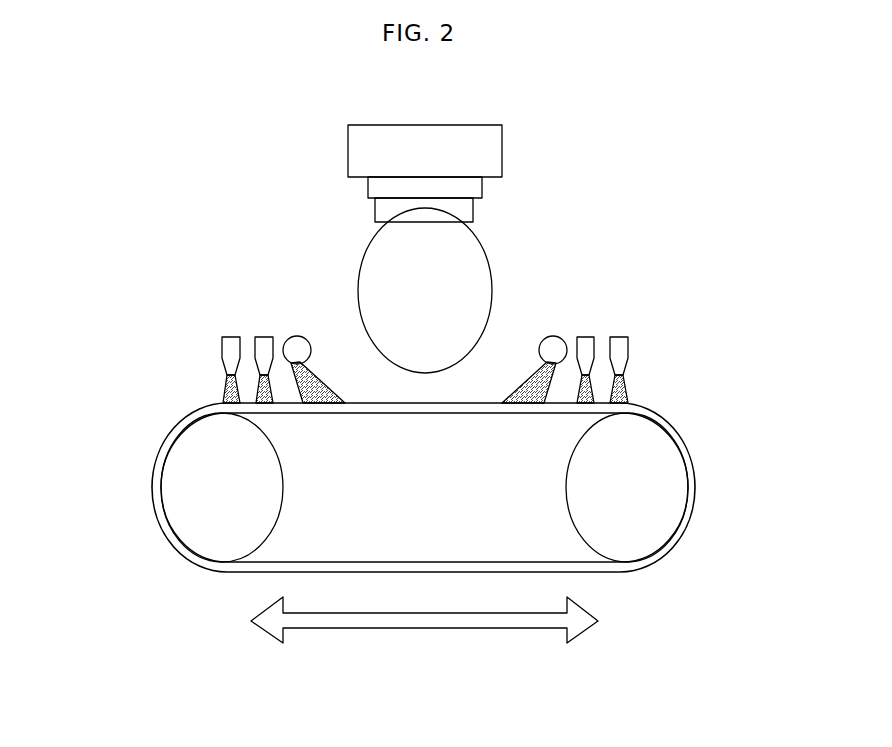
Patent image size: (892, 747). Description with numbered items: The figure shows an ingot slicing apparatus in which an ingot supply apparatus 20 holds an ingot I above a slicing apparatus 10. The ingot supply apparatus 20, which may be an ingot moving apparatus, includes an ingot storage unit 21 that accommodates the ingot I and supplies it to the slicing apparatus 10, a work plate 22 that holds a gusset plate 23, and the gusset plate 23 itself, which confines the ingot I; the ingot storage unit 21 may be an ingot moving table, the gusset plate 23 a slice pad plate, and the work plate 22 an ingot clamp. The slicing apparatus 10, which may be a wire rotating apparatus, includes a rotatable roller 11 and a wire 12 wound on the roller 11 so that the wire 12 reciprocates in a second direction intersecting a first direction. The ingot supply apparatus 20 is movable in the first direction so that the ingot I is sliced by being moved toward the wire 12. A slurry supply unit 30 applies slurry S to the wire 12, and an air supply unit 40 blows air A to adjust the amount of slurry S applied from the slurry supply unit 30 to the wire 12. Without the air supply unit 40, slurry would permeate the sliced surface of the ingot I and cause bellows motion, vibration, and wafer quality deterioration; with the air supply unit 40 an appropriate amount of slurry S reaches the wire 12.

The slicing apparatus 10 is at (425, 487).
The roller 11 is at (183, 483).
The wire 12 is at (160, 453).
The ingot supply apparatus 20 is at (475, 157).
The ingot storage unit 21 is at (469, 150).
The work plate 22 is at (469, 188).
The gusset plate 23 is at (469, 192).
The slurry supply unit 30 is at (232, 332).
The air supply unit 40 is at (290, 330).
The ingot I is at (470, 250).
The slurry S is at (225, 382).
The air A is at (312, 382).